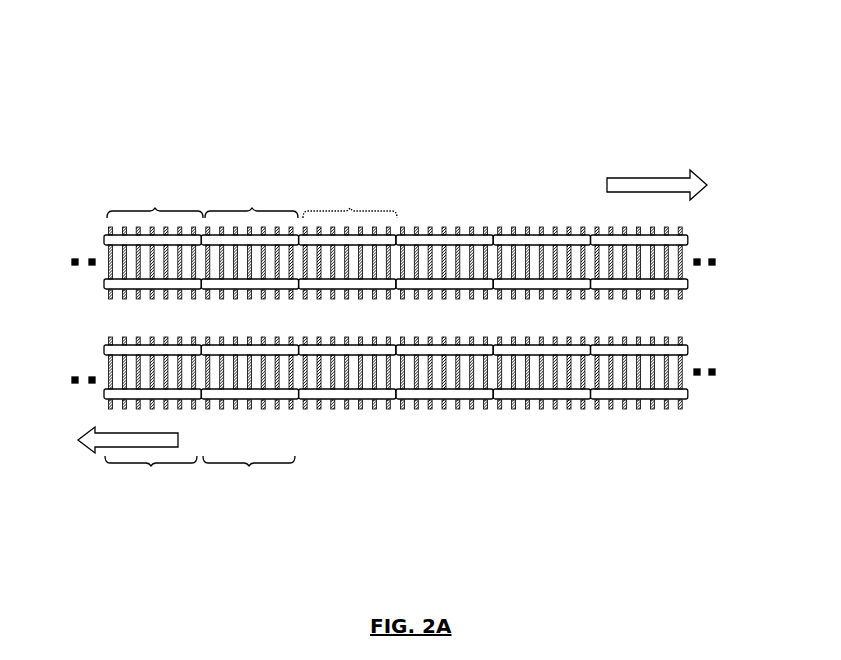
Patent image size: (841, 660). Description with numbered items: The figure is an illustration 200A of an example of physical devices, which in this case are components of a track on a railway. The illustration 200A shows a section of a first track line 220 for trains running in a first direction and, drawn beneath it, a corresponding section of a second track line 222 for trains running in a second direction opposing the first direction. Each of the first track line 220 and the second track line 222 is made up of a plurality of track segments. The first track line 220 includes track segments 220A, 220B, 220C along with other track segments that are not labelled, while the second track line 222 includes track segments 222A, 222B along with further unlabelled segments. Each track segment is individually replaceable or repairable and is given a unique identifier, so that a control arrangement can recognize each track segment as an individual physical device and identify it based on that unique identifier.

The illustration 200A is at (707, 105).
The first track line 220 is at (708, 232).
The second track line 222 is at (708, 347).
The track segment 220A is at (153, 207).
The track segment 220B is at (253, 207).
The track segment 220C is at (353, 207).
The track segment 222A is at (152, 467).
The track segment 222B is at (250, 467).